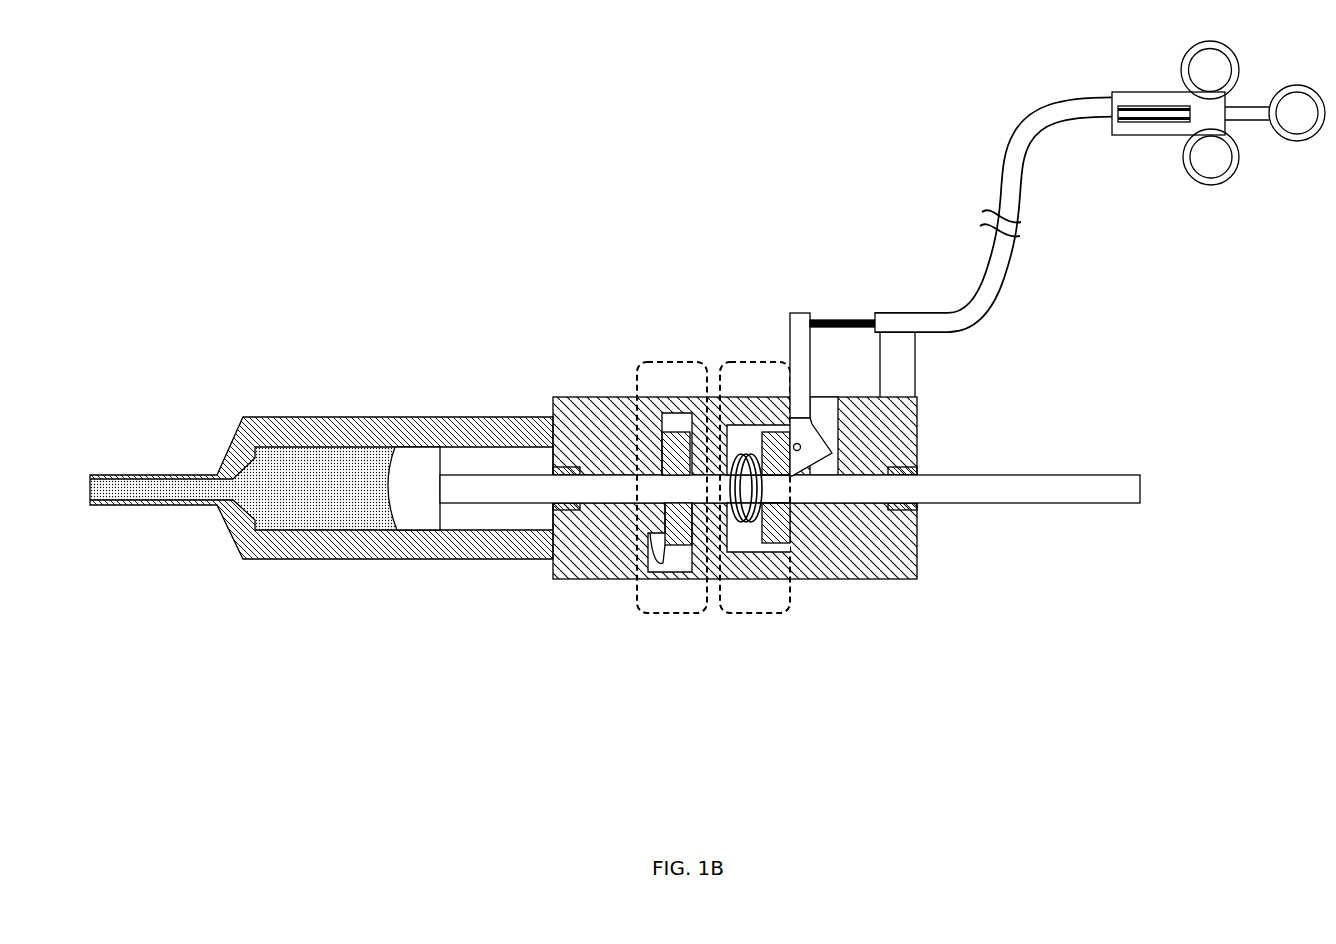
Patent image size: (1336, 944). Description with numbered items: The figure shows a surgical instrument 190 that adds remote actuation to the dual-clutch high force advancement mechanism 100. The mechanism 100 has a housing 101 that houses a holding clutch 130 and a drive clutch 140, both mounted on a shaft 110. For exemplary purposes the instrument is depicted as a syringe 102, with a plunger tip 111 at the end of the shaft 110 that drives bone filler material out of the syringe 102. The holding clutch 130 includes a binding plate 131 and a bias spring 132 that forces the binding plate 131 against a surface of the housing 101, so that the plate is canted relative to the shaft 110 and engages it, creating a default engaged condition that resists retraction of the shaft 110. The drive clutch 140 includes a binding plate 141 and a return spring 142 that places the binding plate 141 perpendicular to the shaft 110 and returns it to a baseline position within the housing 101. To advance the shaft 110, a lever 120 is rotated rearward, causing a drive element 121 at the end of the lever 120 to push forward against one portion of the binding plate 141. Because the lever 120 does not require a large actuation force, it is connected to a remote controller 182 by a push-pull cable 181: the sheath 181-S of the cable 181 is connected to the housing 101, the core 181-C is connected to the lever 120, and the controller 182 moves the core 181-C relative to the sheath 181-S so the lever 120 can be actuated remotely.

The high force advancement mechanism 100 is at (648, 158).
The housing 101 is at (917, 537).
The syringe 102 is at (320, 560).
The shaft 110 is at (500, 473).
The plunger tip 111 is at (413, 478).
The lever 120 is at (803, 411).
The drive element 121 is at (813, 442).
The holding clutch 130 is at (643, 506).
The binding plate 131 is at (678, 535).
The bias spring 132 is at (656, 566).
The drive clutch 140 is at (765, 495).
The binding plate 141 is at (777, 535).
The return spring 142 is at (746, 522).
The push-pull cable 181 is at (1020, 135).
The core 181-C is at (845, 320).
The sheath 181-S is at (963, 297).
The remote controller 182 is at (1233, 172).
The surgical instrument 190 is at (232, 190).